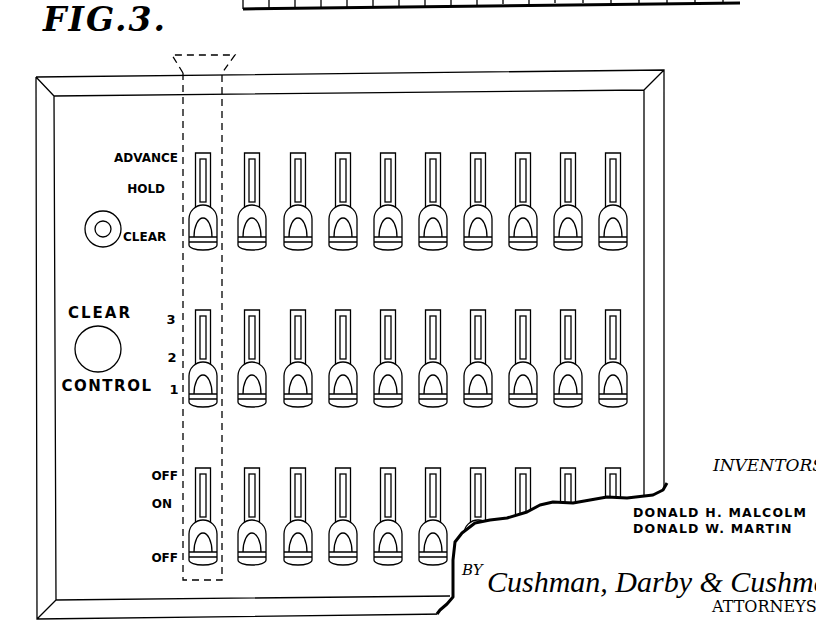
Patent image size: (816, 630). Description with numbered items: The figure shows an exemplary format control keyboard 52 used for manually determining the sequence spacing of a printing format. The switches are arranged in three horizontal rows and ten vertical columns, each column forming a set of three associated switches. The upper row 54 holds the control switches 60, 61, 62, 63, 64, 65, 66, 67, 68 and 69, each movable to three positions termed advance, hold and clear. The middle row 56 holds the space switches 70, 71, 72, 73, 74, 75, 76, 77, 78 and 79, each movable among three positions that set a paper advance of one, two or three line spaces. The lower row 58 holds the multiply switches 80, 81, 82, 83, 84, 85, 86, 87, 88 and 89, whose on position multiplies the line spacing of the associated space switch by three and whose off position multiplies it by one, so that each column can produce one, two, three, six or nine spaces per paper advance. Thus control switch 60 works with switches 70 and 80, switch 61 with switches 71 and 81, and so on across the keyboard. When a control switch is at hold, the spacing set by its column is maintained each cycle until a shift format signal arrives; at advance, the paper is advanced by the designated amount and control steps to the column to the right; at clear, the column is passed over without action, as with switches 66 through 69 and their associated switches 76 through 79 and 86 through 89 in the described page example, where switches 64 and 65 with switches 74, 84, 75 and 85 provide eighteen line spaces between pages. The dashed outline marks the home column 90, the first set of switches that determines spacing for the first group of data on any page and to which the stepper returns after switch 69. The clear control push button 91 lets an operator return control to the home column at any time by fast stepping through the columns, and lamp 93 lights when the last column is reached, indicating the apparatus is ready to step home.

The format control keyboard 52 is at (665, 262).
The row of control switches 54 is at (459, 214).
The row of space switches 56 is at (444, 376).
The row of multiply switches 58 is at (440, 520).
The control switch 60 is at (203, 250).
The control switch 61 is at (252, 250).
The control switch 62 is at (298, 250).
The control switch 63 is at (343, 250).
The control switch 64 is at (388, 250).
The control switch 65 is at (433, 250).
The control switch 66 is at (478, 250).
The control switch 67 is at (523, 250).
The control switch 68 is at (568, 250).
The control switch 69 is at (613, 250).
The space switch 70 is at (203, 407).
The space switch 71 is at (252, 407).
The space switch 72 is at (298, 407).
The space switch 73 is at (343, 407).
The space switch 74 is at (388, 407).
The space switch 75 is at (433, 407).
The space switch 76 is at (478, 407).
The space switch 77 is at (523, 407).
The space switch 78 is at (568, 407).
The space switch 79 is at (613, 407).
The multiply switch 80 is at (203, 565).
The multiply switch 81 is at (252, 565).
The multiply switch 82 is at (298, 565).
The multiply switch 83 is at (343, 565).
The multiply switch 84 is at (388, 565).
The multiply switch 85 is at (433, 565).
The multiply switch 86 is at (477, 468).
The multiply switch 87 is at (522, 468).
The multiply switch 88 is at (567, 468).
The multiply switch 89 is at (612, 468).
The home column 90 is at (215, 52).
The clear control push button 91 is at (119, 338).
The lamp 93 is at (95, 218).